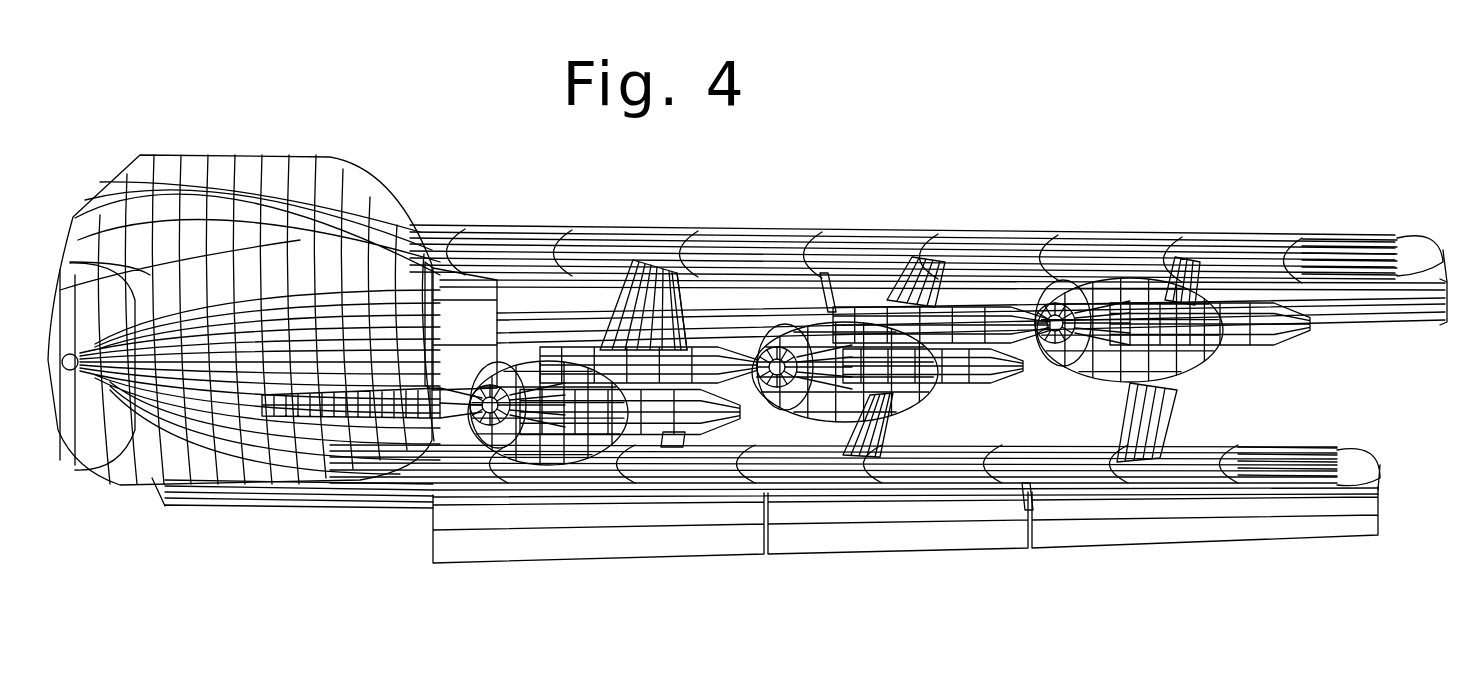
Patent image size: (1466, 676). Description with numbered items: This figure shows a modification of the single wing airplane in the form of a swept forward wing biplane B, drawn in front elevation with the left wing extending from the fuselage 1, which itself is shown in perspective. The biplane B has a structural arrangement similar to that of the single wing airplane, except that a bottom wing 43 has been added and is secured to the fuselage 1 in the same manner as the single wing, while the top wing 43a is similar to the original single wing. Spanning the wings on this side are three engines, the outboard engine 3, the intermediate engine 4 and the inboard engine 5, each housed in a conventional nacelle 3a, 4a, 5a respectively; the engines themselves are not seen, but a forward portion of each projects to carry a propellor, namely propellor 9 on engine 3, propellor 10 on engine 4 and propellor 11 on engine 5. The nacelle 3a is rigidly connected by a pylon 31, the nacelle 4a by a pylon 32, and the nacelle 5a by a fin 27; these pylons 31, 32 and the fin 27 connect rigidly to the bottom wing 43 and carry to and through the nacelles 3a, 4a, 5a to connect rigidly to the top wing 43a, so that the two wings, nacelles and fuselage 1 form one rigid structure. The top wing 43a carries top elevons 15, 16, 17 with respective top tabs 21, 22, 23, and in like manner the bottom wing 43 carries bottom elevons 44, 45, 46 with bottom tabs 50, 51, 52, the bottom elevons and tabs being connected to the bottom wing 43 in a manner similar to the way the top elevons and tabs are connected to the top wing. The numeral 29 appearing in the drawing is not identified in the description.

The fuselage 1 is at (377, 208).
The swept forward wing biplane B is at (229, 508).
The nacelle 5a is at (497, 372).
The propellor 11 is at (452, 405).
The top tab 23 is at (495, 318).
The top elevon 17 is at (540, 272).
The top elevon 16 is at (1010, 275).
The top tab 21 is at (1410, 310).
The top wing 43a is at (1335, 240).
The top elevon 15 is at (1440, 262).
The fin 27 is at (630, 275).
The pylon side 29 is at (685, 275).
The top tab 22 is at (862, 305).
The engine 5 is at (478, 392).
The nacelle 4a is at (873, 374).
The engine 4 is at (778, 392).
The propellor 10 is at (1000, 374).
The pylon 32 is at (890, 430).
The nacelle 3a is at (1215, 362).
The engine 3 is at (1062, 350).
The propellor 9 is at (1295, 330).
The pylon 31 is at (1160, 418).
The bottom elevon 46 is at (624, 488).
The bottom elevon 45 is at (855, 488).
The bottom tab 52 is at (730, 540).
The bottom tab 51 is at (995, 533).
The bottom tab 50 is at (1275, 530).
The bottom wing 43 is at (1315, 460).
The bottom elevon 44 is at (1372, 475).